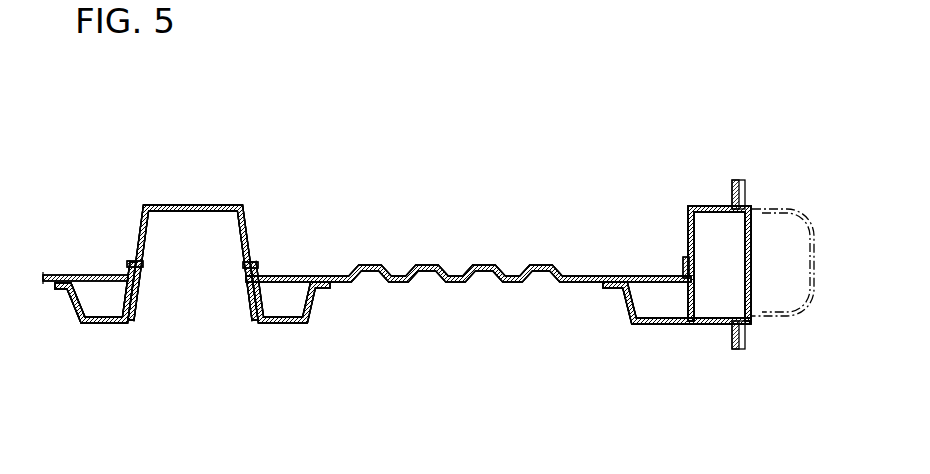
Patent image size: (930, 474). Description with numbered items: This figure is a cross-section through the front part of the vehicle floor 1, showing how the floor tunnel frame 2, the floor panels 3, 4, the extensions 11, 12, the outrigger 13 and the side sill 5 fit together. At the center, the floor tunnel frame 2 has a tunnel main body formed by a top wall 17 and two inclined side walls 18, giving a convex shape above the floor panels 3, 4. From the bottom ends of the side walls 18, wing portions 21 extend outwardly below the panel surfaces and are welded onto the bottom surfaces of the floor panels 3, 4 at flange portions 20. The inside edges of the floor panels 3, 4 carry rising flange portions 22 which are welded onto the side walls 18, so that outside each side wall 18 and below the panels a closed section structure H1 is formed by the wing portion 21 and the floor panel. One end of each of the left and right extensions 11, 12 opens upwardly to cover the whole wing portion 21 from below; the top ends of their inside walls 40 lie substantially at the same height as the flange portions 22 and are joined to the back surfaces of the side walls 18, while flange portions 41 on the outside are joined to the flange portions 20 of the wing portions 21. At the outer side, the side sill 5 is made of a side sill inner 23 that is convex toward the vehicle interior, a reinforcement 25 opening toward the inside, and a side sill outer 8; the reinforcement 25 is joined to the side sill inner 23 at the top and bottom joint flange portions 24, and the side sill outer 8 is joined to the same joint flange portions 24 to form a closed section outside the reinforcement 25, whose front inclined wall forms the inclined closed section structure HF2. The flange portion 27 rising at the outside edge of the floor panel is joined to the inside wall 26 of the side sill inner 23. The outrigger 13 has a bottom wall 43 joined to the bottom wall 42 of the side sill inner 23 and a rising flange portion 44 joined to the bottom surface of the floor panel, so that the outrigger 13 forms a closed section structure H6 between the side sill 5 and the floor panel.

The floor 1 is at (444, 219).
The floor tunnel frame 2 is at (232, 196).
The left floor panel 3 is at (548, 265).
The right floor panel 4 is at (78, 275).
The left side sill 5 is at (711, 206).
The side sill outer 8 is at (790, 208).
The left extension 11 is at (318, 292).
The right extension 12 is at (112, 326).
The left outrigger 13 is at (642, 325).
The top wall 17 is at (190, 204).
The inclined side wall 18 is at (141, 230).
The flange portion 20 is at (43, 284).
The wing portion 21 is at (134, 300).
The flange portion 22 is at (124, 266).
The side sill inner 23 is at (688, 206).
The joint flange portion 24 is at (746, 188).
The reinforcement 25 is at (751, 272).
The inside wall 26 is at (688, 232).
The flange portion 27 is at (683, 265).
The inside wall 40 is at (141, 289).
The flange portion 41 is at (57, 290).
The bottom wall 42 is at (714, 305).
The bottom wall 43 is at (673, 325).
The rising flange portion 44 is at (614, 289).
The closed section structure H1 is at (96, 300).
The closed section structure H6 is at (675, 312).
The inclined closed section structure HF2 is at (700, 276).